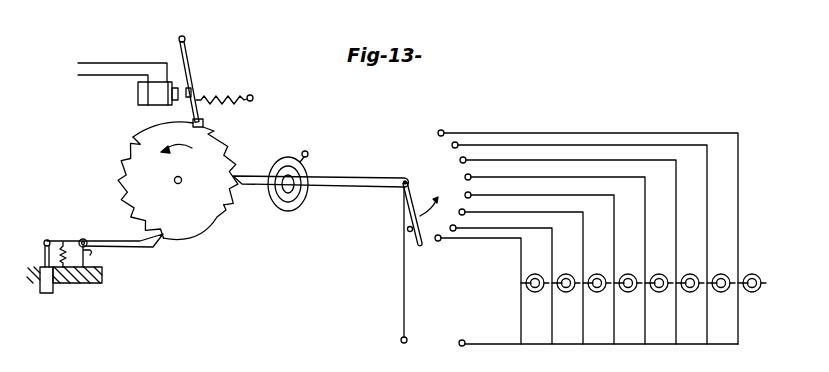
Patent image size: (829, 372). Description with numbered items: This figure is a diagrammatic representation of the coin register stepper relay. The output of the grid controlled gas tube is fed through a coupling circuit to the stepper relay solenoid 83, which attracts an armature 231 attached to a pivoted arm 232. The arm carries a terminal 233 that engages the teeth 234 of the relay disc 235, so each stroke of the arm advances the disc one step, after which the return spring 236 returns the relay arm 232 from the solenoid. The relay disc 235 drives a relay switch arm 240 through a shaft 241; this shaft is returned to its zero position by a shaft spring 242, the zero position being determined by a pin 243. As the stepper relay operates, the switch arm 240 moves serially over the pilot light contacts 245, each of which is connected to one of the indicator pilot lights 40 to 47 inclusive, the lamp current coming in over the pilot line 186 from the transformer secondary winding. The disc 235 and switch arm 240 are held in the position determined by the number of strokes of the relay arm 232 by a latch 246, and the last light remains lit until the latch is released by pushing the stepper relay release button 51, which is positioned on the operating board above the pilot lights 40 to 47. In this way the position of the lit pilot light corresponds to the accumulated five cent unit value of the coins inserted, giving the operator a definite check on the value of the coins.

The stepper relay solenoid 83 is at (150, 94).
The armature 231 is at (188, 96).
The pivoted arm 232 is at (193, 72).
The terminal 233 is at (203, 122).
The teeth 234 is at (232, 198).
The relay disc 235 is at (137, 177).
The return spring 236 is at (227, 92).
The relay switch arm 240 is at (417, 197).
The shaft 241 is at (327, 186).
The shaft spring 242 is at (288, 212).
The pin 243 is at (412, 232).
The pilot light contacts 245 is at (466, 175).
The latch 246 is at (150, 247).
The stepper relay release button 51 is at (50, 285).
The indicator pilot light 40 is at (535, 288).
The indicator pilot light 47 is at (763, 290).
The pilot line 186 is at (462, 346).